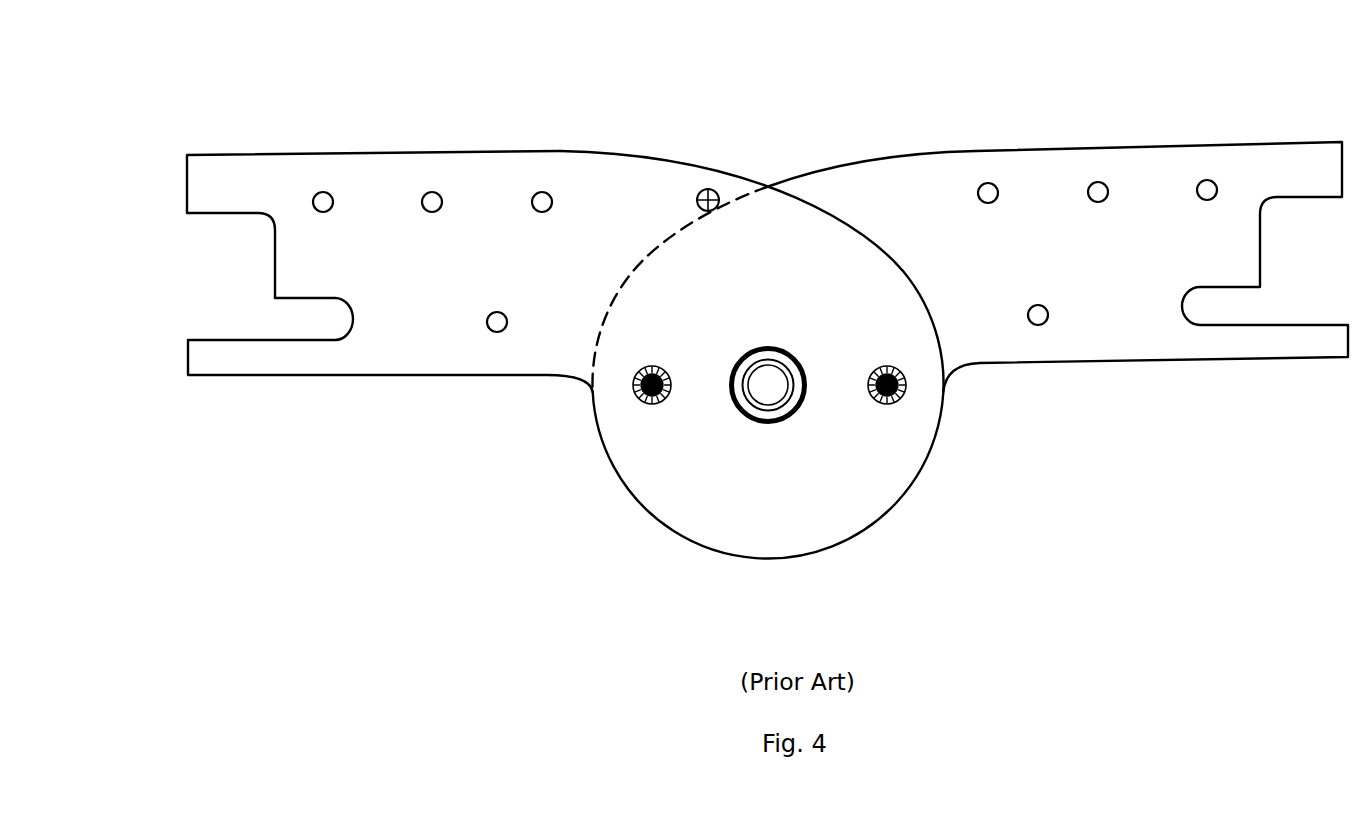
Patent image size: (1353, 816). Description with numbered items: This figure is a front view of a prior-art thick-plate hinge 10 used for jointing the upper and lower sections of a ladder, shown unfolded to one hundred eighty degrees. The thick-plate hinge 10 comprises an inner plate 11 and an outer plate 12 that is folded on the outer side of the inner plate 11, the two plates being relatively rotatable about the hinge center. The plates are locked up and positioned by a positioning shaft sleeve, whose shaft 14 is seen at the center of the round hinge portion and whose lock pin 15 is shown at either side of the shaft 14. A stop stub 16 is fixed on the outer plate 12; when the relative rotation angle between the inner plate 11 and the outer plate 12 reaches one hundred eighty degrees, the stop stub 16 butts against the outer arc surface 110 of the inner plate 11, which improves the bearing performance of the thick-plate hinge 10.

The thick-plate hinge 10 is at (326, 123).
The inner plate 11 is at (907, 165).
The outer plate 12 is at (488, 175).
The shaft 14 is at (787, 398).
The lock pin 15 is at (645, 405).
The stop stub 16 is at (702, 190).
The outer arc surface 110 is at (718, 208).